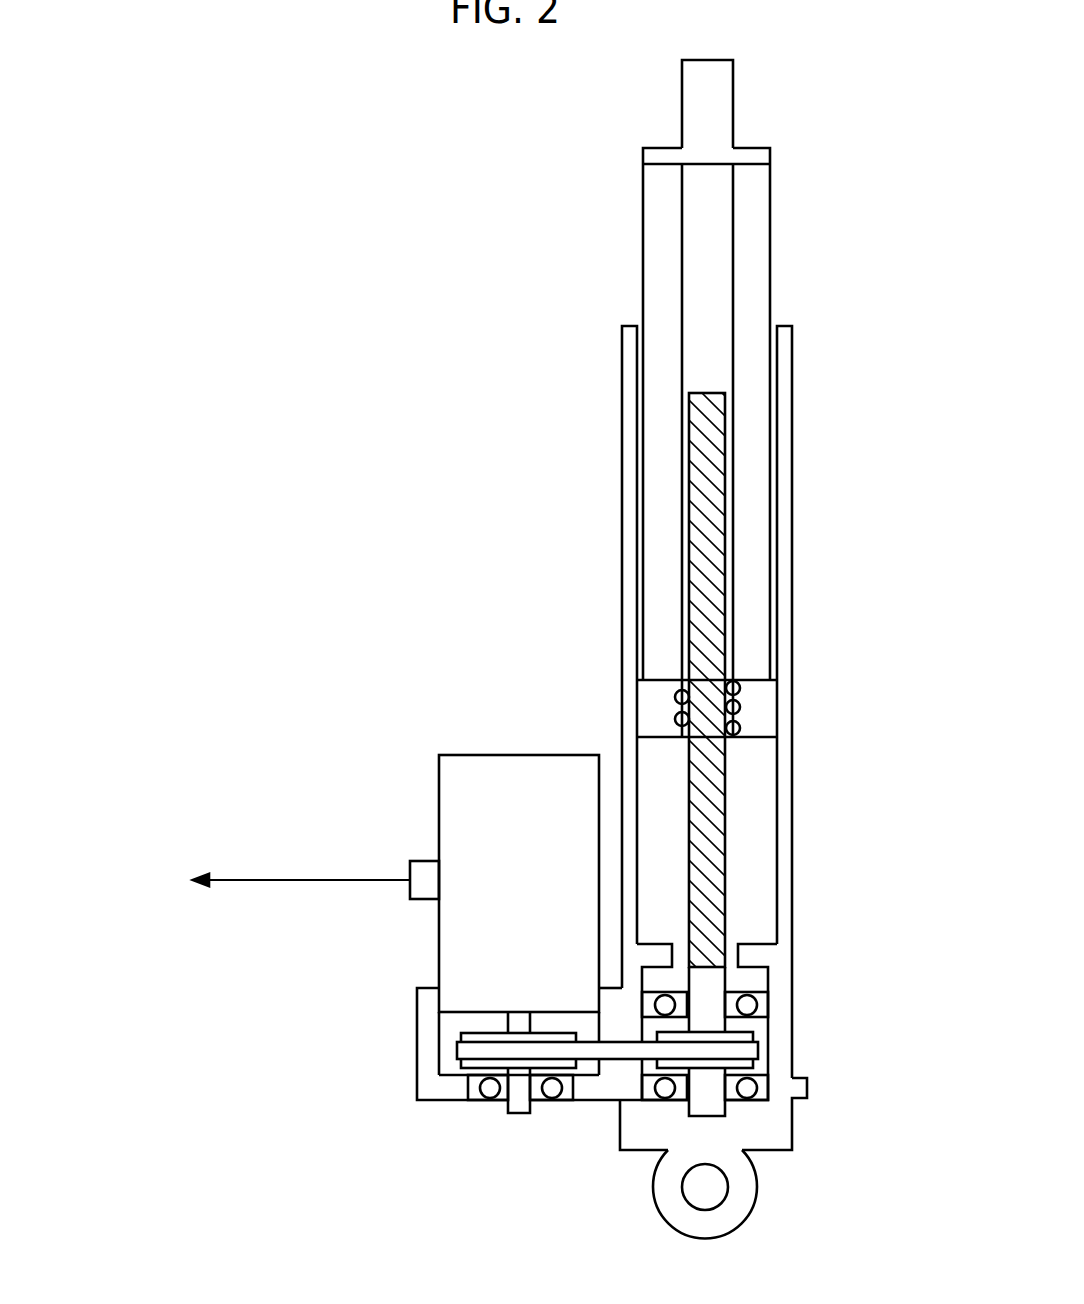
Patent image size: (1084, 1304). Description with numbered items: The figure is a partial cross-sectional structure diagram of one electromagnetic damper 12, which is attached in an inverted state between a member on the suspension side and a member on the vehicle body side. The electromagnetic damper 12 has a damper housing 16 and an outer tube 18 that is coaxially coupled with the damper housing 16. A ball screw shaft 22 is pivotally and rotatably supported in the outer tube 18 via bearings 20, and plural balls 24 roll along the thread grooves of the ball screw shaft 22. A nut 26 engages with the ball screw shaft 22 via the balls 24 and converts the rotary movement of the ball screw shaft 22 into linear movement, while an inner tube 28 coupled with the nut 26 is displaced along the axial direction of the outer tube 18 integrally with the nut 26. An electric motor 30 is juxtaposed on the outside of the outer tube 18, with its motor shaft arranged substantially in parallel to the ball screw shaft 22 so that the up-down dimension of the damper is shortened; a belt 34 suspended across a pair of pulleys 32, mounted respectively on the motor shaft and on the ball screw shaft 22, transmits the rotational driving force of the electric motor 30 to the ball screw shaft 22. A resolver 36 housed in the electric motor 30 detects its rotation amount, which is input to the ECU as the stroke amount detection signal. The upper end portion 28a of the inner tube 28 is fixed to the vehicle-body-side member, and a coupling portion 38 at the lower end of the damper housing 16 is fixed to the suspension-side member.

The electromagnetic damper 12 is at (824, 164).
The damper housing 16 is at (778, 1038).
The outer tube 18 is at (783, 373).
The bearings 20 is at (755, 1005).
The ball screw shaft 22 is at (725, 803).
The balls 24 is at (735, 708).
The nut 26 is at (665, 693).
The inner tube 28 is at (754, 242).
The upper end portion 28a is at (717, 105).
The electric motor 30 is at (517, 767).
The pulleys 32 is at (755, 1063).
The belt 34 is at (613, 1053).
The resolver 36 is at (423, 872).
The coupling portion 38 is at (745, 1188).